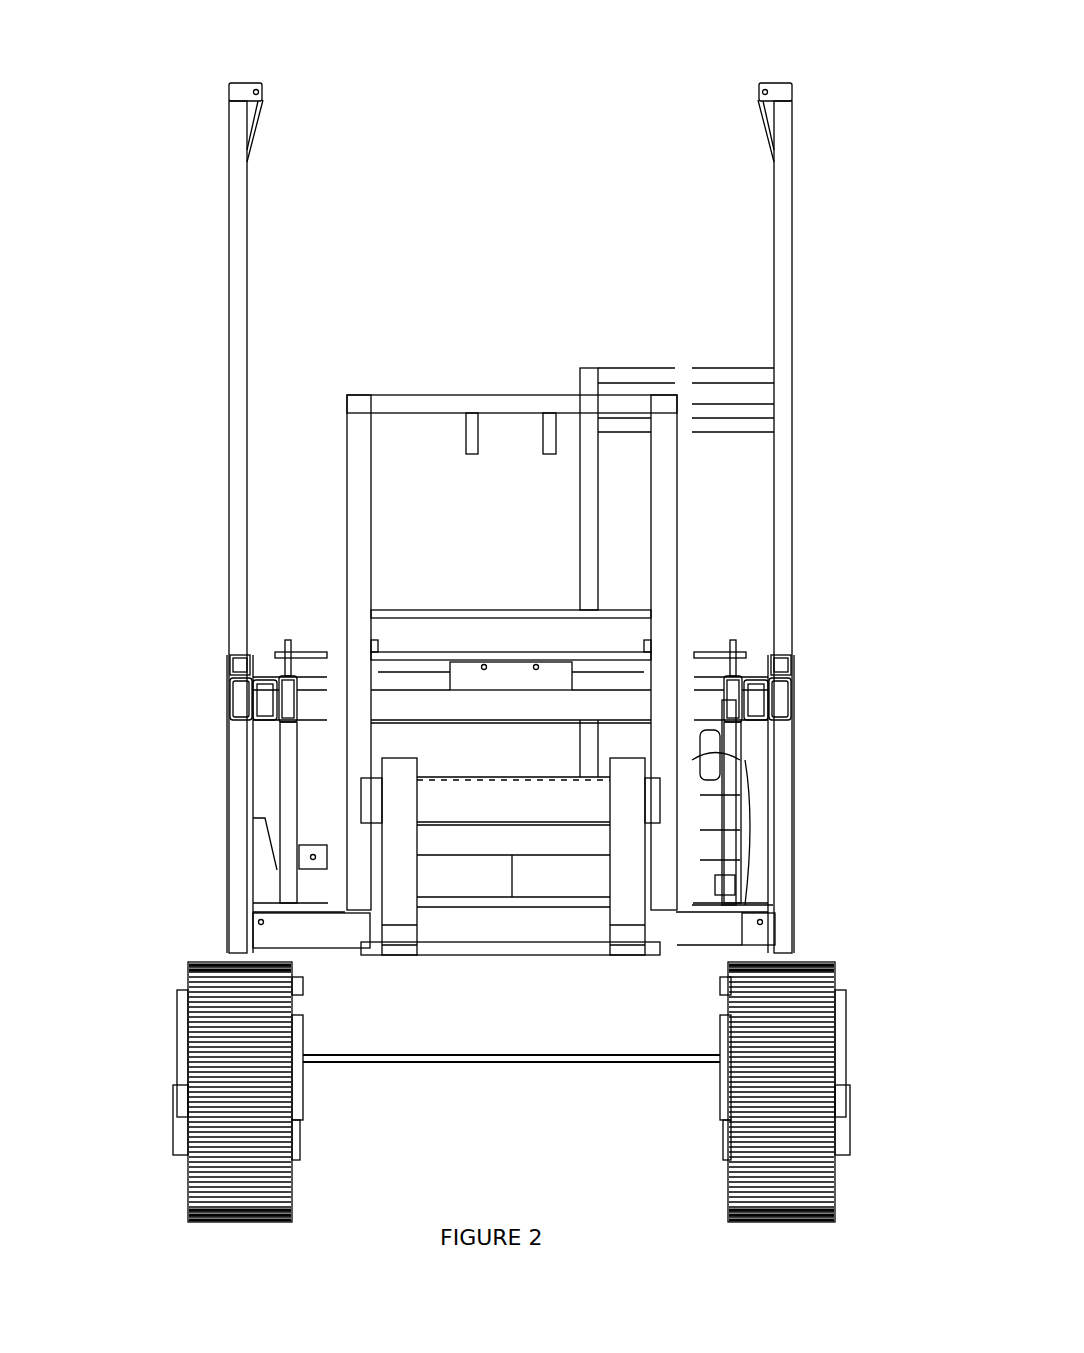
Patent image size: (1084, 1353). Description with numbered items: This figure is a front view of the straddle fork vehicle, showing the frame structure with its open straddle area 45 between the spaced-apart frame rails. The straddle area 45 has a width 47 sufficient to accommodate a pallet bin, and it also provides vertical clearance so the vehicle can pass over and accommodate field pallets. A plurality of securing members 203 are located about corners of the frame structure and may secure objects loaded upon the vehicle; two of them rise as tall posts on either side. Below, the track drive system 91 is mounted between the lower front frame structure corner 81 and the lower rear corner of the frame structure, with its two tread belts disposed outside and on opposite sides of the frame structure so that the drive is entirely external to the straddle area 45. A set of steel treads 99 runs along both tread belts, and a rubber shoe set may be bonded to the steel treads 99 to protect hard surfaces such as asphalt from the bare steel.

The securing member 203 is at (253, 100).
The lower front frame structure corner 81 is at (232, 957).
The track drive system 91 is at (182, 1133).
The set of steel treads 99 is at (235, 1224).
The width 47 is at (495, 1055).
The straddle area 45 is at (513, 661).